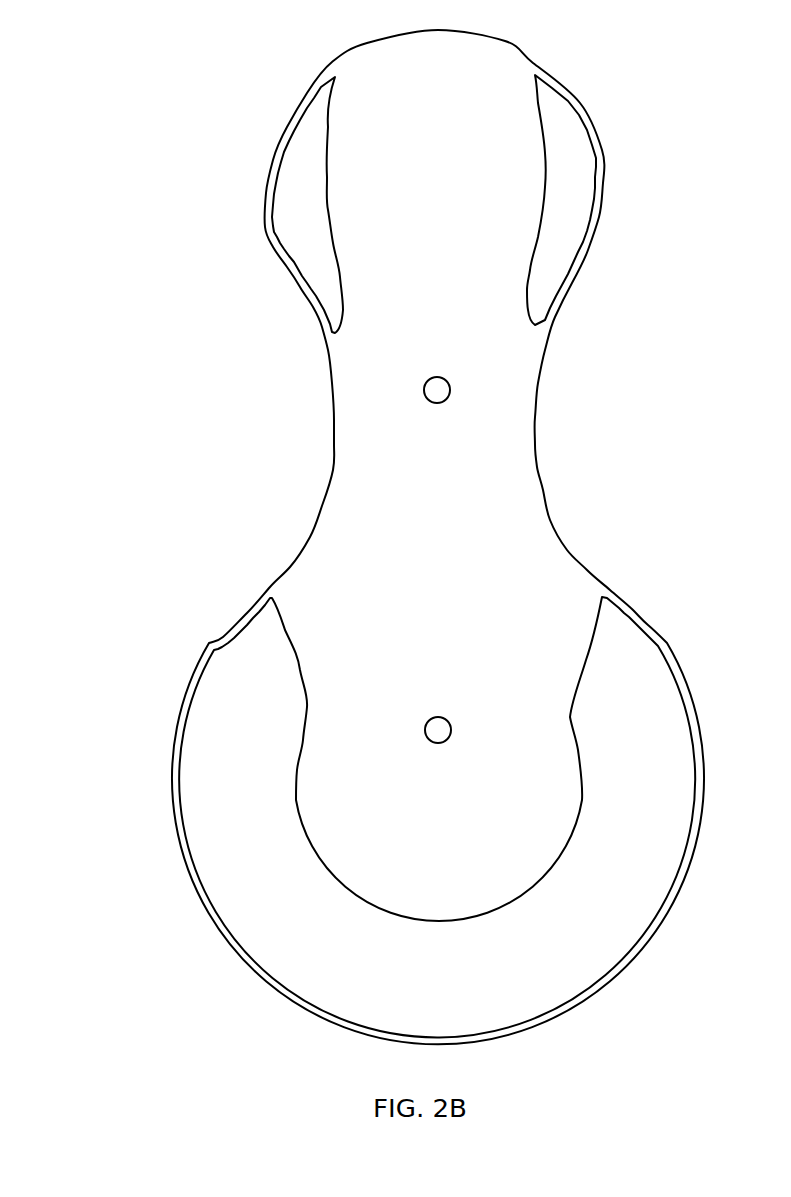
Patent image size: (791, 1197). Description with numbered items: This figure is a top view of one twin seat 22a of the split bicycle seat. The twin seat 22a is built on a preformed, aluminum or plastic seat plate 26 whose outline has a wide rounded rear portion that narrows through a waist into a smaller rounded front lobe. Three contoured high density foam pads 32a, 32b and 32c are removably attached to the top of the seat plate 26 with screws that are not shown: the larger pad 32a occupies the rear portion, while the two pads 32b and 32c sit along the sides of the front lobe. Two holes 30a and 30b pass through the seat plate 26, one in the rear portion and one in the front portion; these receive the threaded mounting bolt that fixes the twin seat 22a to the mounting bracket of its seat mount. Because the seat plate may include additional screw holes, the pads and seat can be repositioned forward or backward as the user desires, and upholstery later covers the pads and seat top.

The twin seat 22a is at (385, 554).
The seat plate 26 is at (537, 433).
The hole 30a is at (444, 733).
The hole 30b is at (437, 398).
The contoured high density foam pad 32a is at (590, 960).
The contoured high density foam pad 32b is at (297, 136).
The contoured high density foam pad 32c is at (587, 168).